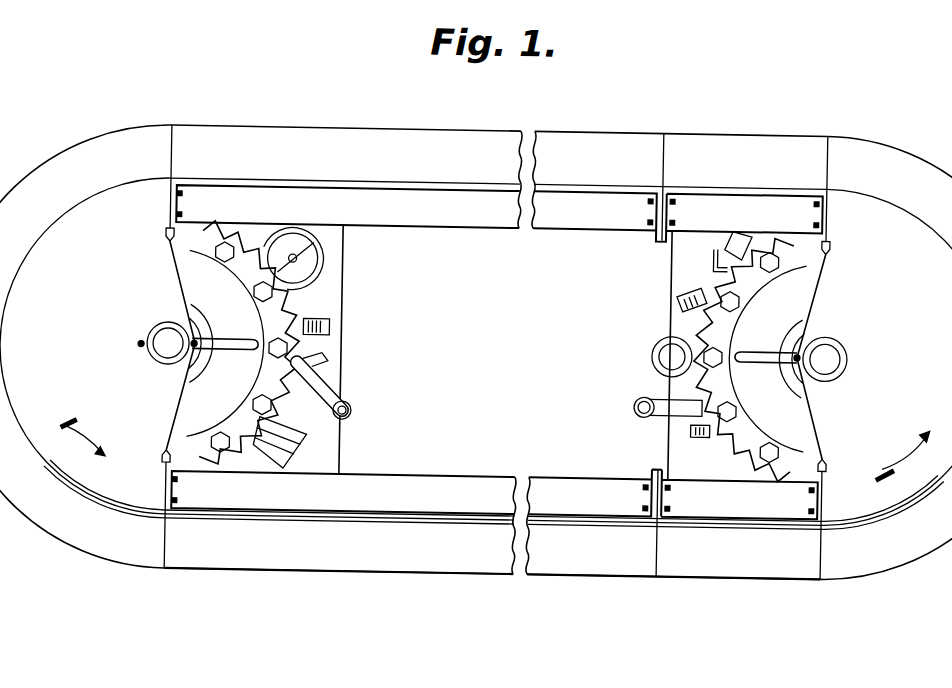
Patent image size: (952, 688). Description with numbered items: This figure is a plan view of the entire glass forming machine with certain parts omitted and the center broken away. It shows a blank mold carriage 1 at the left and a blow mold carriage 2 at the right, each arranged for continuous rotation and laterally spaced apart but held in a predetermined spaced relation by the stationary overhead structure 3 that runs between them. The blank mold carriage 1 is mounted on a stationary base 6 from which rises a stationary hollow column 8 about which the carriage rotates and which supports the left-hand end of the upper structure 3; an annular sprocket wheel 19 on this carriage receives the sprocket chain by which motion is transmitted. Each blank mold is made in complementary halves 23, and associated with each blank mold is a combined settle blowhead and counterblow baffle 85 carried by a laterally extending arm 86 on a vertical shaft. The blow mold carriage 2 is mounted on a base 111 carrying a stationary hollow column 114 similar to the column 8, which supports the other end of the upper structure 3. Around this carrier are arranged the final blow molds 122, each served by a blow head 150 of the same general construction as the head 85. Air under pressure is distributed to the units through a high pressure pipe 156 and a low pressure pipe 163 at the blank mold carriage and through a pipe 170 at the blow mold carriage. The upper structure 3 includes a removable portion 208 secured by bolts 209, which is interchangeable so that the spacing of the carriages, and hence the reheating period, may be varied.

The blank mold carriage 1 is at (348, 306).
The blow mold carriage 2 is at (660, 283).
The overhead structure 3 is at (401, 150).
The stationary base 6 is at (330, 450).
The stationary hollow column 8 is at (173, 361).
The annular sprocket wheel 19 is at (250, 443).
The blank mold halves 23 is at (317, 254).
The combined settle blowhead and counterblow baffle 85 is at (352, 410).
The laterally extending arm 86 is at (330, 390).
The base 111 is at (682, 256).
The stationary hollow column 114 is at (847, 359).
The final blow molds 122 is at (682, 307).
The blow head 150 is at (640, 405).
The pipe 156 is at (188, 326).
The pipe 163 is at (140, 342).
The pipe 170 is at (797, 331).
The removable portion 208 is at (672, 570).
The bolts 209 is at (810, 480).